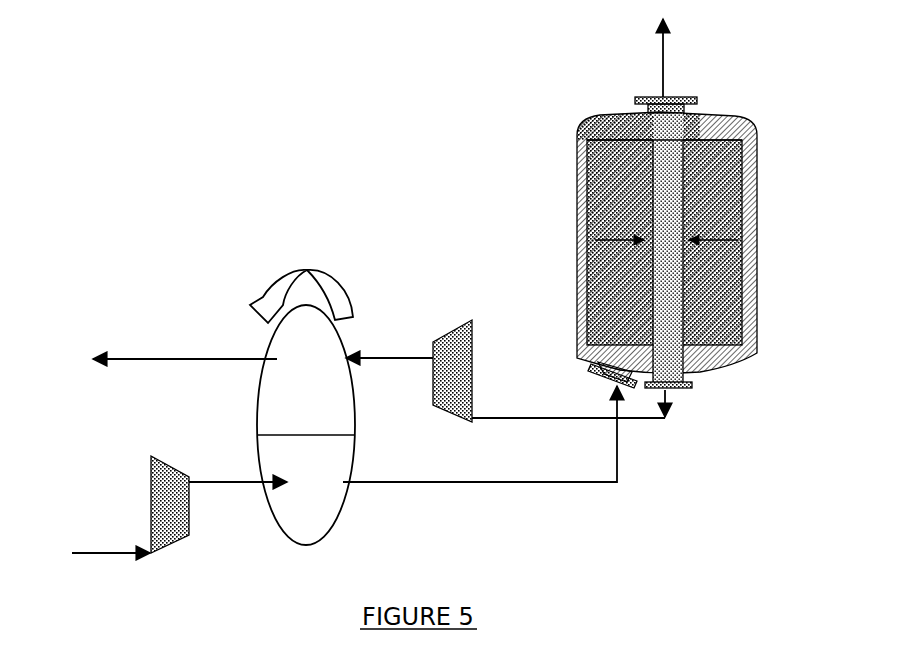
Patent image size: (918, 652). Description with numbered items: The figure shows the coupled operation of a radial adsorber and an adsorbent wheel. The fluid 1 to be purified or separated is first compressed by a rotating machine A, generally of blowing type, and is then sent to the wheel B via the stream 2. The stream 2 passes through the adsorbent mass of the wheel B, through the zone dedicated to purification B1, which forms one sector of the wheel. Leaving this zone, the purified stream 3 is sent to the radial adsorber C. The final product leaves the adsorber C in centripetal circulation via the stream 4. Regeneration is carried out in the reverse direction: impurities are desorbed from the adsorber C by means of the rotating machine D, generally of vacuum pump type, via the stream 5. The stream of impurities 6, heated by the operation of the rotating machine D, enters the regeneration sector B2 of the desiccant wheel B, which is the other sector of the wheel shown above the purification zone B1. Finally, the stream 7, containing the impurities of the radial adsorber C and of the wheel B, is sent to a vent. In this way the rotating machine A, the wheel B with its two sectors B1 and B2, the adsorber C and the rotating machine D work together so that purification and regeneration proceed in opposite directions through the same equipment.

The fluid to be purified or separated 1 is at (111, 544).
The stream 2 is at (238, 472).
The purified stream 3 is at (480, 434).
The stream 4 is at (679, 58).
The stream 5 is at (568, 404).
The stream of impurities 6 is at (389, 371).
The stream 7 is at (185, 372).
The rotating machine A is at (170, 504).
The wheel B is at (302, 428).
The zone dedicated to purification B1 is at (306, 495).
The regeneration sector B2 is at (306, 375).
The adsorber C is at (667, 256).
The rotating machine D is at (452, 371).